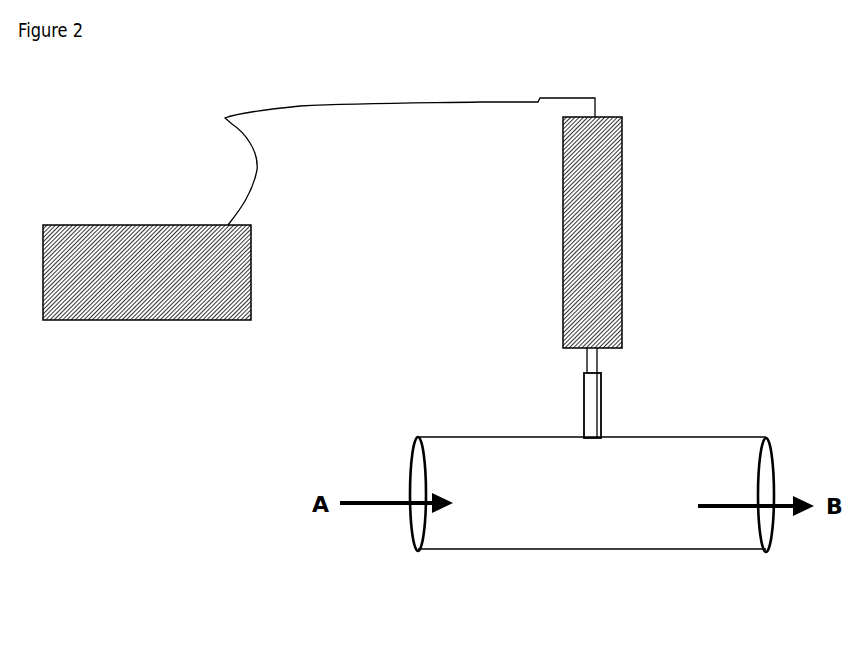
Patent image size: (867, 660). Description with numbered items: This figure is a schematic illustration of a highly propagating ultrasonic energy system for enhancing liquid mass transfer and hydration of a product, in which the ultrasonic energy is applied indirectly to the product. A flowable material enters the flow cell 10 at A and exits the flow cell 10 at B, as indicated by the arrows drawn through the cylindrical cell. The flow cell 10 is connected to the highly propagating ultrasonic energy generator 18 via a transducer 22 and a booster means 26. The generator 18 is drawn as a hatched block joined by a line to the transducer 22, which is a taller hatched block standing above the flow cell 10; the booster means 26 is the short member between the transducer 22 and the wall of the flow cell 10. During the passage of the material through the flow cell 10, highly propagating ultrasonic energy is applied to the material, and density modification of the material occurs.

The flow cell 10 is at (538, 549).
The highly propagating ultrasonic energy generator 18 is at (126, 320).
The transducer 22 is at (563, 208).
The booster means 26 is at (583, 396).